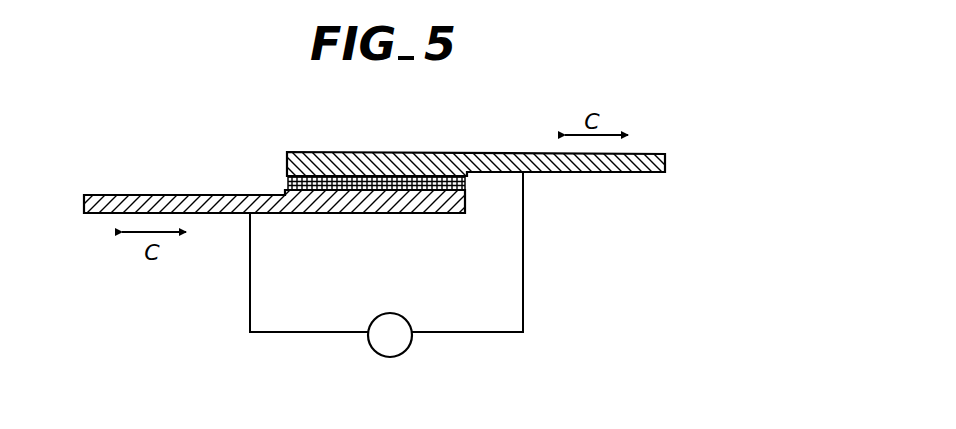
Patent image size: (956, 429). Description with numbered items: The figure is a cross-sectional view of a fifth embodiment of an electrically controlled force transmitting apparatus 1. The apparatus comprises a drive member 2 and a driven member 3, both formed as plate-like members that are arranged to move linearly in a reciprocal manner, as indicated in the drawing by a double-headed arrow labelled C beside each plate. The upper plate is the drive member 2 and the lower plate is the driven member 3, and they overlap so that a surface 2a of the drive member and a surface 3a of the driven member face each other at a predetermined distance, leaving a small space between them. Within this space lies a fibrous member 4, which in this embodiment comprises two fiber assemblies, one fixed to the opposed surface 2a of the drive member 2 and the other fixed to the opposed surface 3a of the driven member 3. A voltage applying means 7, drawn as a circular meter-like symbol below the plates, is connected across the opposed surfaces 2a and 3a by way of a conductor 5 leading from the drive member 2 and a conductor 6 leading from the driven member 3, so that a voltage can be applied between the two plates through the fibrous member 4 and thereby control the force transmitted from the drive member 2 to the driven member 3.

The electrically controlled force transmitting apparatus 1 is at (352, 146).
The drive member 2 is at (443, 151).
The surface of drive member 2a is at (288, 180).
The driven member 3 is at (300, 215).
The surface of driven member 3a is at (465, 180).
The fibrous member 4 is at (362, 191).
The conductor 5 is at (524, 277).
The conductor 6 is at (250, 277).
The voltage applying means 7 is at (410, 346).